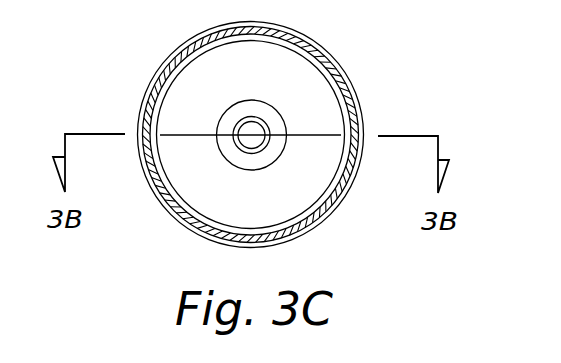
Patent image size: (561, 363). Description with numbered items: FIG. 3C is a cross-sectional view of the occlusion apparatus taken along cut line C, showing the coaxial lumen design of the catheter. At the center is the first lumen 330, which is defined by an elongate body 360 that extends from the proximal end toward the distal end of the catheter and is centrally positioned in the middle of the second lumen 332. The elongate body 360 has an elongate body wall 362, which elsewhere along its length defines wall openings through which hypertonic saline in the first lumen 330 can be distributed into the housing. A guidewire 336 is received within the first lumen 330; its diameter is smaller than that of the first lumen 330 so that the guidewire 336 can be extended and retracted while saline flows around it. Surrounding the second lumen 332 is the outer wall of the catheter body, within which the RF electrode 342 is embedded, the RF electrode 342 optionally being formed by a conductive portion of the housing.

The first lumen 330 is at (267, 144).
The second lumen 332 is at (292, 68).
The guidewire 336 is at (252, 118).
The RF electrode 342 is at (351, 188).
The elongate body 360 is at (217, 132).
The elongate body wall 362 is at (233, 157).